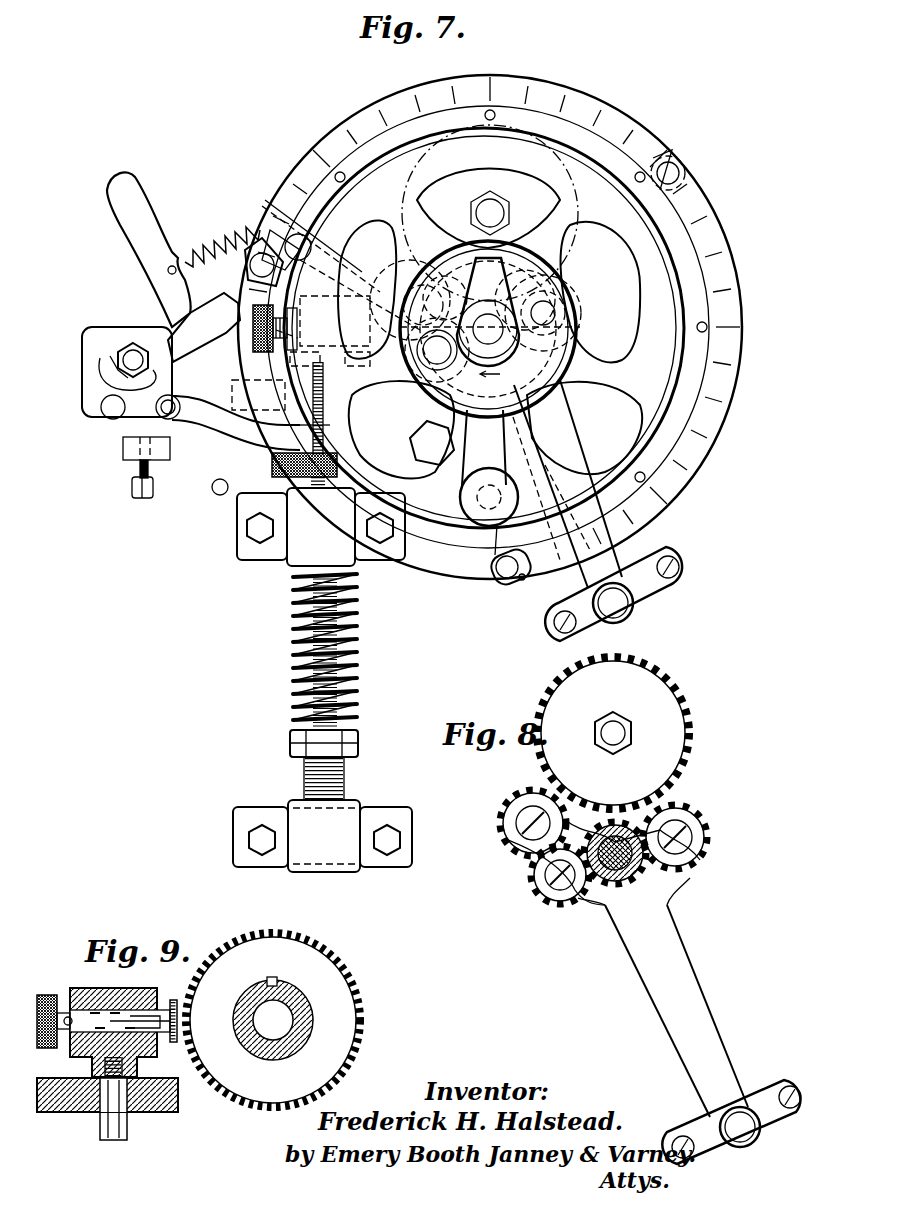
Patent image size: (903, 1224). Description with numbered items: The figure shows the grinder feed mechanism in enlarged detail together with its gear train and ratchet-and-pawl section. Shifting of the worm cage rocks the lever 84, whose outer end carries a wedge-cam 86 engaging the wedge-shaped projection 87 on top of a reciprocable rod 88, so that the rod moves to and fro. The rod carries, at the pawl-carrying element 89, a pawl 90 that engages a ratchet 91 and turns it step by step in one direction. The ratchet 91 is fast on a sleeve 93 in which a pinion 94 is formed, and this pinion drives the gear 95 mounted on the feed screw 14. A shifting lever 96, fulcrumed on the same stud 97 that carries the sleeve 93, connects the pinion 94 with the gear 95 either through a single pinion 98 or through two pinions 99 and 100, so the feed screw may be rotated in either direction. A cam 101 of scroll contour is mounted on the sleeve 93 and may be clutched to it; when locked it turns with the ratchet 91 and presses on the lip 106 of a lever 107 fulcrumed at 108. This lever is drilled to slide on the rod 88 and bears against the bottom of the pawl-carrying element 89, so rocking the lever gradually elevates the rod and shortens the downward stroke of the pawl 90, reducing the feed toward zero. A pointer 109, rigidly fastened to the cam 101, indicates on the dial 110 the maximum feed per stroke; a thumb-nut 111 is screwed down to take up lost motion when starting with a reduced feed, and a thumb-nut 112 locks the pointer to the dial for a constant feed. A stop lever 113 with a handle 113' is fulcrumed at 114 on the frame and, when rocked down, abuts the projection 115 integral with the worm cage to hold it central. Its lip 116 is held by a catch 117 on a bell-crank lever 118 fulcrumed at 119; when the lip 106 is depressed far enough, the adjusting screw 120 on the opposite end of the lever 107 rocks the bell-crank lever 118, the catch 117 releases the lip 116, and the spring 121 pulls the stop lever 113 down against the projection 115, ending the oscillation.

In FIG. 8, the feed screw 14 is at (613, 730).
In FIG. 7, the lever 84 is at (323, 331).
In FIG. 7, the wedge-cam 86 is at (262, 349).
In FIG. 7, the wedge-shaped projection 87 is at (282, 305).
In FIG. 7, the reciprocable rod 88 is at (312, 446).
In FIG. 9, the reciprocable rod 88 is at (100, 1124).
In FIG. 7, the pawl-carrying element 89 is at (292, 352).
In FIG. 9, the pawl-carrying element 89 is at (85, 1000).
In FIG. 7, the pawl 90 is at (397, 296).
In FIG. 9, the pawl 90 is at (173, 1002).
In FIG. 7, the ratchet 91 is at (427, 293).
In FIG. 9, the ratchet 91 is at (195, 1030).
In FIG. 9, the sleeve 93 is at (292, 1050).
In FIG. 8, the pinion 94 is at (588, 905).
In FIG. 7, the gear 95 is at (444, 160).
In FIG. 8, the gear 95 is at (690, 705).
In FIG. 8, the lever 96 is at (692, 982).
In FIG. 7, the stud 97 is at (545, 288).
In FIG. 8, the stud 97 is at (640, 870).
In FIG. 7, the single pinion 98 is at (582, 310).
In FIG. 8, the single pinion 98 is at (700, 822).
In FIG. 7, the pinion 99 is at (440, 388).
In FIG. 8, the pinion 99 is at (540, 900).
In FIG. 7, the pinion 100 is at (405, 262).
In FIG. 8, the pinion 100 is at (512, 840).
In FIG. 7, the cam 101 is at (473, 213).
In FIG. 7, the lip 106 is at (530, 405).
In FIG. 7, the lever 107 is at (230, 440).
In FIG. 9, the lever 107 is at (152, 1100).
In FIG. 7, the fulcrum 108 is at (470, 520).
In FIG. 7, the pointer 109 is at (275, 195).
In FIG. 7, the dial 110 is at (690, 206).
In FIG. 7, the thumb-nut 111 is at (272, 462).
In FIG. 7, the thumb-nut 112 is at (300, 255).
In FIG. 7, the stop lever 113 is at (206, 318).
In FIG. 7, the lever handle 113' is at (145, 249).
In FIG. 7, the fulcrum 114 is at (133, 352).
In FIG. 7, the projection 115 is at (232, 388).
In FIG. 7, the lip 116 is at (106, 352).
In FIG. 7, the catch 117 is at (100, 362).
In FIG. 7, the bell-crank lever 118 is at (105, 410).
In FIG. 7, the fulcrum 119 is at (108, 438).
In FIG. 7, the adjusting screw 120 is at (135, 470).
In FIG. 7, the spring 121 is at (210, 245).